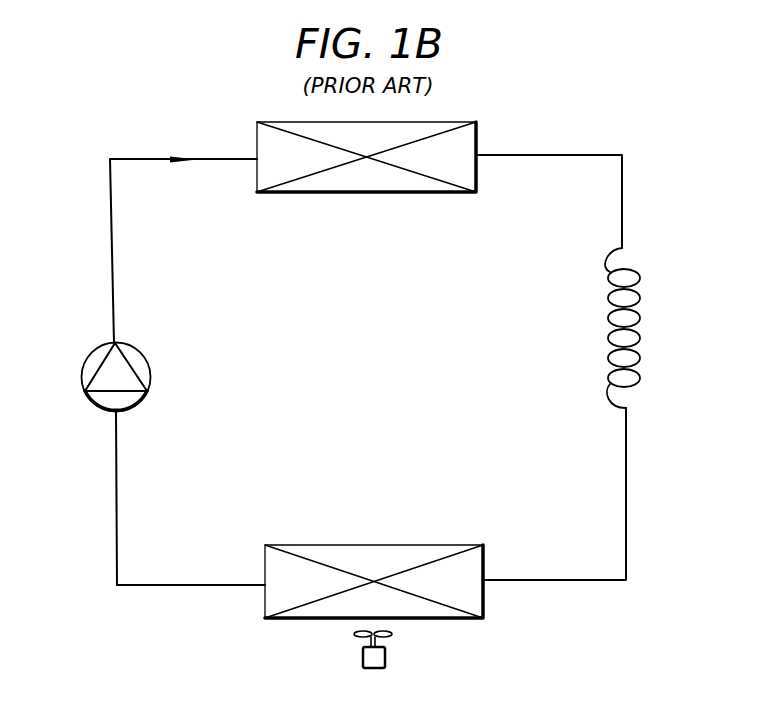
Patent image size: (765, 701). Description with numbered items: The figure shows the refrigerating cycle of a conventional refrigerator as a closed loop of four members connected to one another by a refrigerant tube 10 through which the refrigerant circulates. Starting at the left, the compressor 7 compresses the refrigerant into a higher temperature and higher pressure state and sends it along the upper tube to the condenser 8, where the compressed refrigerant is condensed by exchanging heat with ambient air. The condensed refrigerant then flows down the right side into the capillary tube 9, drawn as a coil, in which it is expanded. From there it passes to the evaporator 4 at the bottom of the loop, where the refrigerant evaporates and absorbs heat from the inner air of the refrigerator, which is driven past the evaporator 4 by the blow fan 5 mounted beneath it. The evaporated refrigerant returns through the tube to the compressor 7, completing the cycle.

The evaporator 4 is at (362, 545).
The blow fan 5 is at (363, 658).
The compressor 7 is at (82, 372).
The condenser 8 is at (357, 193).
The capillary tube 9 is at (640, 338).
The refrigerant circuit piping 10 is at (138, 159).